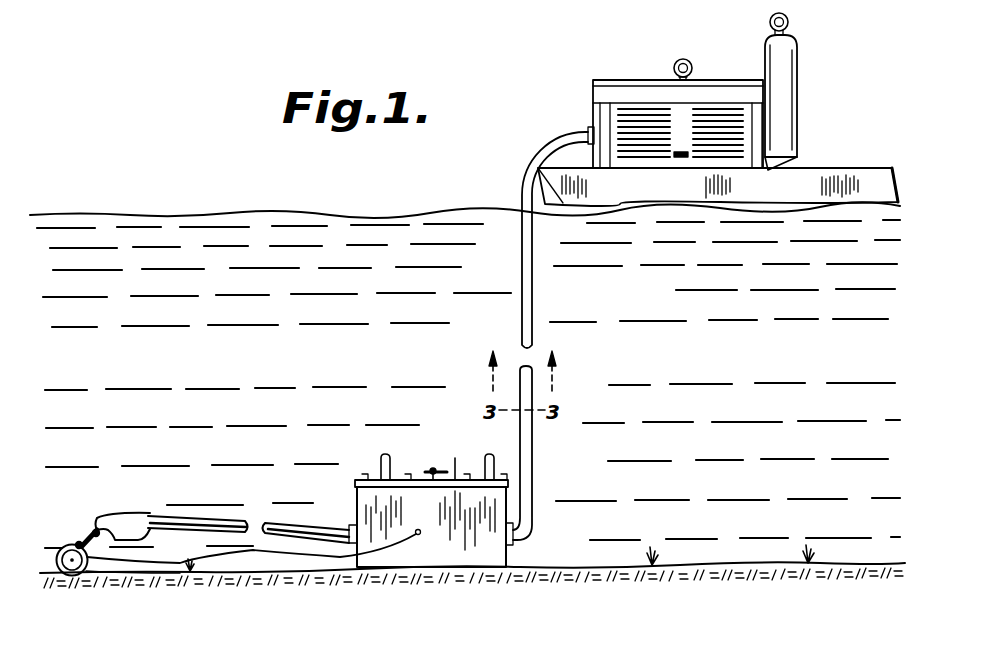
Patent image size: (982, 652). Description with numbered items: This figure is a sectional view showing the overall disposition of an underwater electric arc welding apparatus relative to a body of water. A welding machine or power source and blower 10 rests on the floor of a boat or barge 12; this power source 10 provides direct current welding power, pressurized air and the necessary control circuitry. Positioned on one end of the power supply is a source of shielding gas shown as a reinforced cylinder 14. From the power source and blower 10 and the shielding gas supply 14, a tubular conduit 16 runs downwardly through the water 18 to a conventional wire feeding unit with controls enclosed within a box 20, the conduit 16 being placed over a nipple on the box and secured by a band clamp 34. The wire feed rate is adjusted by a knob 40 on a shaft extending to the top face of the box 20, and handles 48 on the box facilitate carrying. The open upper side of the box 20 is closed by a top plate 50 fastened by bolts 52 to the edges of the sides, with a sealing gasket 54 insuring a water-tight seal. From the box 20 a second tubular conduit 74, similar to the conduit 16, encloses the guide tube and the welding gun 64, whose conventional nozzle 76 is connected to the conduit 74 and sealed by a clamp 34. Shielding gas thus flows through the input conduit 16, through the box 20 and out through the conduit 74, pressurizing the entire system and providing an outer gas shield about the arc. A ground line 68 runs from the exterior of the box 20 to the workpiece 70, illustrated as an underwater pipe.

The welding machine or power source and blower 10 is at (633, 87).
The boat or barge 12 is at (860, 168).
The reinforced cylinder 14 is at (782, 47).
The tubular conduit 16 is at (533, 305).
The water 18 is at (258, 210).
The box 20 is at (406, 520).
The band clamp 34 is at (94, 526).
The knob 40 is at (432, 468).
The handles 48 is at (391, 453).
The top plate 50 is at (458, 457).
The bolts 52 is at (468, 481).
The sealing gasket 54 is at (507, 488).
The welding gun 64 is at (137, 517).
The ground line 68 is at (268, 556).
The workpiece 70 is at (67, 546).
The tubular conduit 74 is at (271, 522).
The nozzle 76 is at (83, 538).